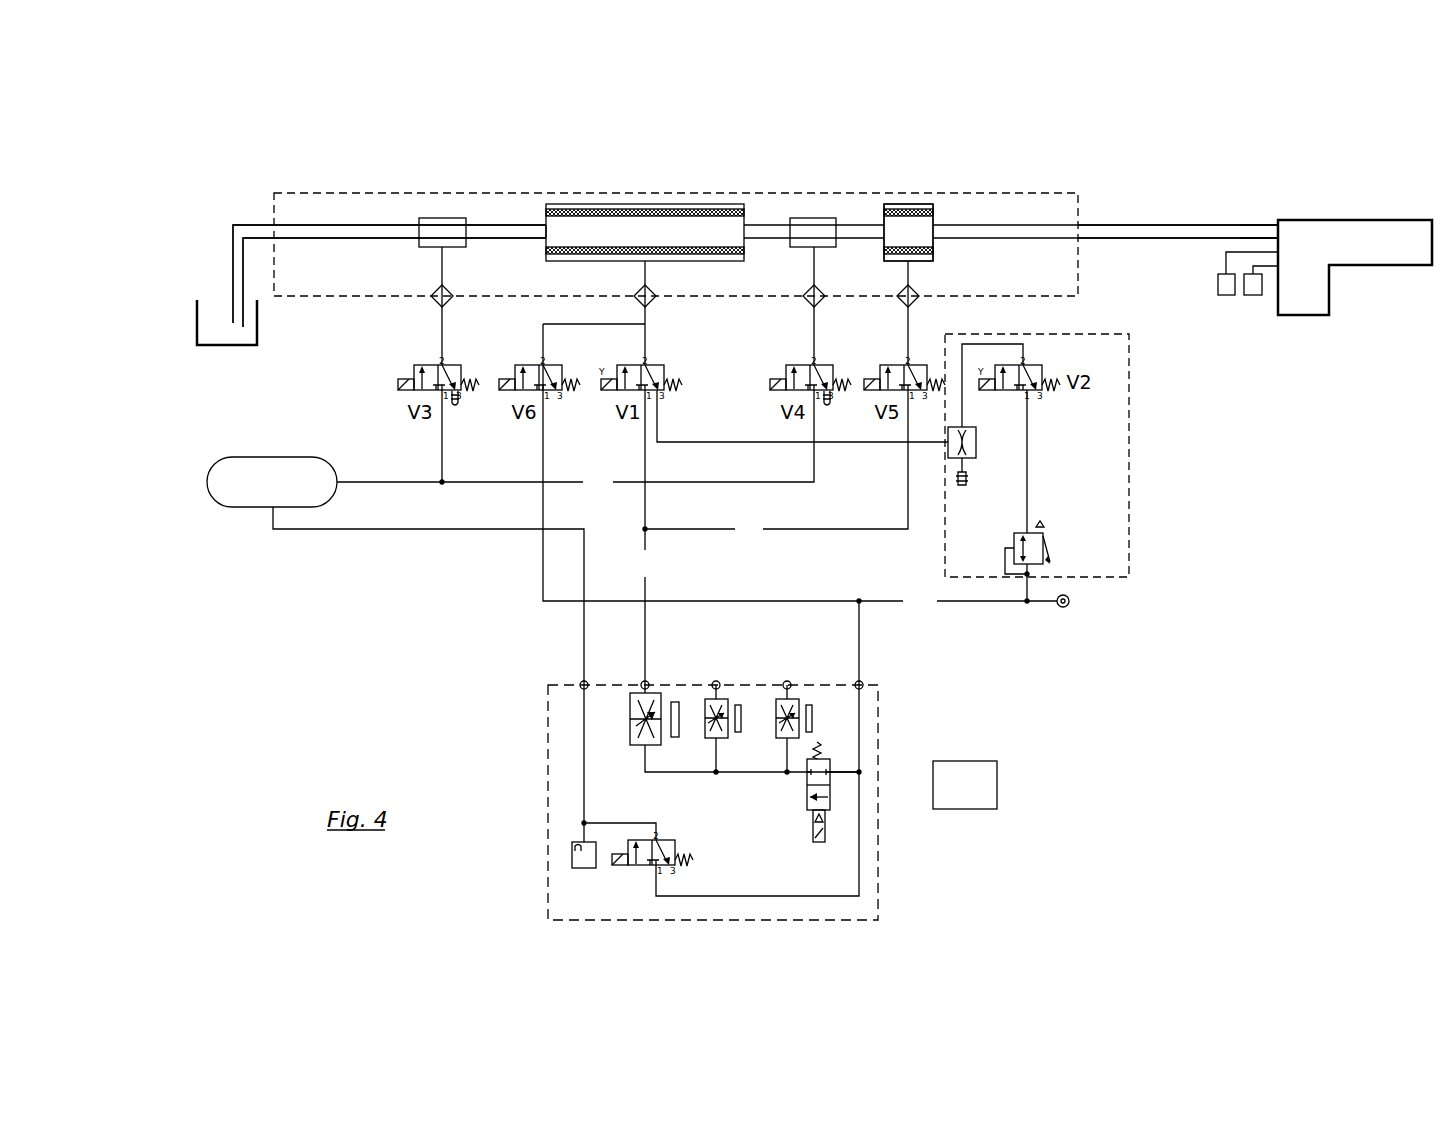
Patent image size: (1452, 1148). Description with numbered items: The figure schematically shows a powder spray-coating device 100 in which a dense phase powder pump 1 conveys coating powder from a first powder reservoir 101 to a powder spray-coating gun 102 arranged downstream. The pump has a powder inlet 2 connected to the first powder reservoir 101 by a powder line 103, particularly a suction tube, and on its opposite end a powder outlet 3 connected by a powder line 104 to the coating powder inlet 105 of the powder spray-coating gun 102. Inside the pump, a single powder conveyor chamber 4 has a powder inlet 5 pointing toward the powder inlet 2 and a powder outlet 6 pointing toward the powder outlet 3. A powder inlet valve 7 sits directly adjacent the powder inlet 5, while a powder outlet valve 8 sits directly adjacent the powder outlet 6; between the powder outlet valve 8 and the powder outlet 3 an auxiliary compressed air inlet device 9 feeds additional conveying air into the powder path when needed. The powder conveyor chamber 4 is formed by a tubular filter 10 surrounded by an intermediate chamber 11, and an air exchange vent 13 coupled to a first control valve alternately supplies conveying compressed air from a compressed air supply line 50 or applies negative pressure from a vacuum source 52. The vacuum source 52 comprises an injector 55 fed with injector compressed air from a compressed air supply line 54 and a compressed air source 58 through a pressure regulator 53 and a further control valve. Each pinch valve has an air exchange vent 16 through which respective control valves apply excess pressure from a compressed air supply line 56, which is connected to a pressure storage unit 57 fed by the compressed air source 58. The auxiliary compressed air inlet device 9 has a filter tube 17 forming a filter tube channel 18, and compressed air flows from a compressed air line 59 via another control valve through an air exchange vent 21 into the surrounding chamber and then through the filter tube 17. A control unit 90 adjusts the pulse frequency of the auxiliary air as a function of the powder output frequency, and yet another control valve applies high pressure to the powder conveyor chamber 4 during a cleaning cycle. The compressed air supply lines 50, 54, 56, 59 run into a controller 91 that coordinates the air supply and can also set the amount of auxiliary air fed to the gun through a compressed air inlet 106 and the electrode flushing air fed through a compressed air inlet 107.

The powder spray-coating device 100 is at (700, 99).
The dense phase powder pump 1 is at (314, 191).
The powder inlet 2 is at (275, 233).
The powder outlet 3 is at (1082, 232).
The powder conveyor chamber 4 is at (567, 204).
The powder inlet 5 is at (543, 230).
The powder outlet 6 is at (749, 230).
The powder inlet valve 7 is at (427, 217).
The powder outlet valve 8 is at (815, 222).
The auxiliary compressed air inlet device 9 is at (892, 208).
The tubular filter 10 is at (627, 216).
The intermediate chamber 11 is at (665, 204).
The air exchange vent 13 is at (643, 262).
The air exchange vent 16 is at (440, 247).
The filter tube 17 is at (932, 213).
The filter tube channel 18 is at (897, 232).
The air exchange vent 21 is at (910, 261).
The compressed air supply line 50 is at (645, 541).
The vacuum source 52 is at (1105, 580).
The pressure regulator 53 is at (1043, 495).
The compressed air supply line 54 is at (800, 468).
The injector 55 is at (840, 414).
The compressed air supply line 56 is at (575, 441).
The pressure storage unit 57 is at (272, 482).
The compressed air source 58 is at (1068, 606).
The compressed air line 59 is at (775, 465).
The control unit 90 is at (975, 800).
The controller 91 is at (876, 809).
The first powder reservoir 101 is at (218, 327).
The powder spray-coating gun 102 is at (1318, 238).
The powder line 103 is at (233, 252).
The powder line 104 is at (1132, 232).
The coating powder inlet 105 is at (1280, 232).
The compressed air inlet 106 is at (1226, 287).
The compressed air inlet 107 is at (1252, 287).